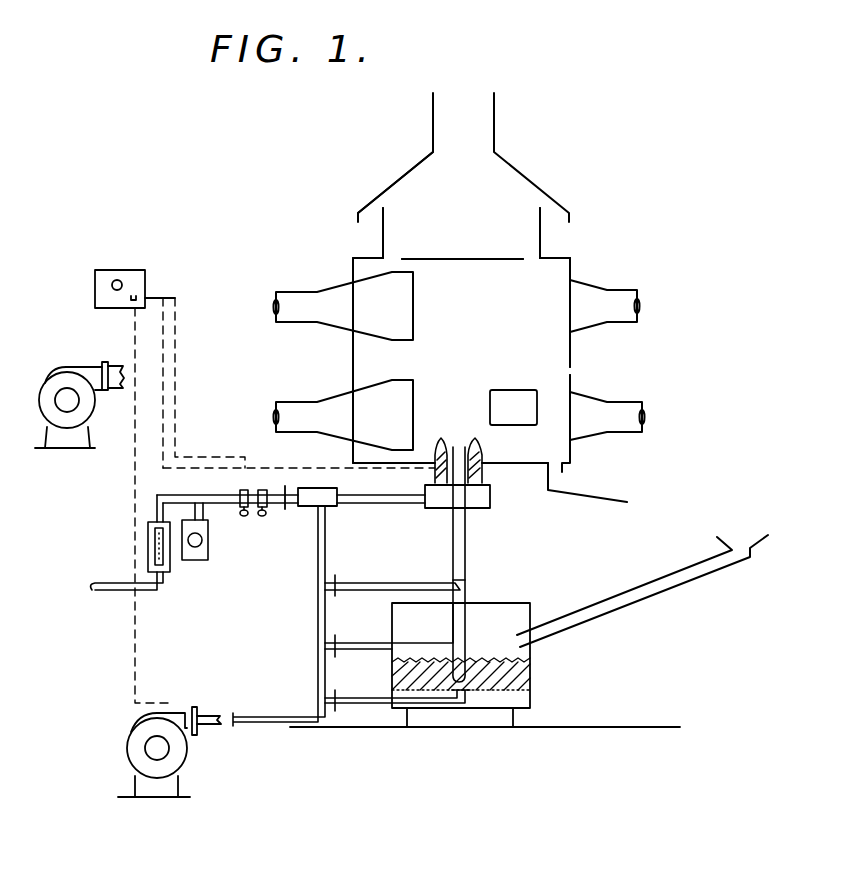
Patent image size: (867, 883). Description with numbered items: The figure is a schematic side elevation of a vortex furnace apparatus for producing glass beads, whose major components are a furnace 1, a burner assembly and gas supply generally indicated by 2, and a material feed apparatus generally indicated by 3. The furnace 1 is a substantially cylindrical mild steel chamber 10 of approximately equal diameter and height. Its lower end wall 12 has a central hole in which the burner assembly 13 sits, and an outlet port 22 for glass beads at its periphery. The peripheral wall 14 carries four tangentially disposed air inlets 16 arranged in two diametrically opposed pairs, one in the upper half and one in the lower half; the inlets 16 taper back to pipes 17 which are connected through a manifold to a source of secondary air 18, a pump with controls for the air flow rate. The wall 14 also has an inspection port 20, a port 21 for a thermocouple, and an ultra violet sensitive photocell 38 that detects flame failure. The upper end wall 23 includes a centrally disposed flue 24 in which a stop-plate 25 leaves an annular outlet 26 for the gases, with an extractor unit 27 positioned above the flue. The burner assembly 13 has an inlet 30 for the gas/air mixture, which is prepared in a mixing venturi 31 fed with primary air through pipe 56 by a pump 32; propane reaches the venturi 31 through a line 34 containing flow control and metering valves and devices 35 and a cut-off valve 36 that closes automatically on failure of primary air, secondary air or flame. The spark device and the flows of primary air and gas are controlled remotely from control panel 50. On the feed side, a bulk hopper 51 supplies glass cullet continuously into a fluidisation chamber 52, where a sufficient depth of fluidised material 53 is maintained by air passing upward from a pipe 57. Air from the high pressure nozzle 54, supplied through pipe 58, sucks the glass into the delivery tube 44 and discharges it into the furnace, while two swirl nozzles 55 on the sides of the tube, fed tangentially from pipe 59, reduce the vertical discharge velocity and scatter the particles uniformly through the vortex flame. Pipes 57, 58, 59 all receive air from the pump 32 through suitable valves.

The furnace 1 is at (344, 150).
The burner assembly and gas supply 2 is at (295, 586).
The material feed apparatus 3 is at (595, 650).
The chamber 10 is at (527, 295).
The lower end wall 12 is at (365, 468).
The burner assembly 13 is at (489, 505).
The peripheral wall 14 is at (353, 352).
The air inlets 16 is at (383, 410).
The pipes 17 is at (274, 300).
The source of secondary air 18 is at (58, 368).
The inspection port 20 is at (510, 396).
The port 21 is at (583, 369).
The outlet port 22 is at (560, 473).
The upper end wall 23 is at (557, 255).
The flue 24 is at (540, 230).
The stop-plate 25 is at (450, 258).
The annular outlet 26 is at (395, 258).
The extractor unit 27 is at (404, 175).
The inlet 30 is at (385, 504).
The mixing venturi 31 is at (334, 506).
The pump 32 is at (140, 725).
The line 34 is at (118, 542).
The flow control and metering valves and devices 35 is at (262, 517).
The cut-off valve 36 is at (285, 511).
The ultra violet sensitive photocell 38 is at (428, 445).
The delivery tube 44 is at (467, 594).
The control panel 50 is at (102, 270).
The bulk hopper 51 is at (735, 545).
The fluidisation chamber 52 is at (524, 603).
The fluidised material 53 is at (531, 680).
The high pressure nozzle 54 is at (452, 643).
The swirl nozzles 55 is at (455, 580).
The pipe 56 is at (282, 714).
The pipe 57 is at (355, 698).
The pipe 58 is at (355, 644).
The pipe 59 is at (358, 584).